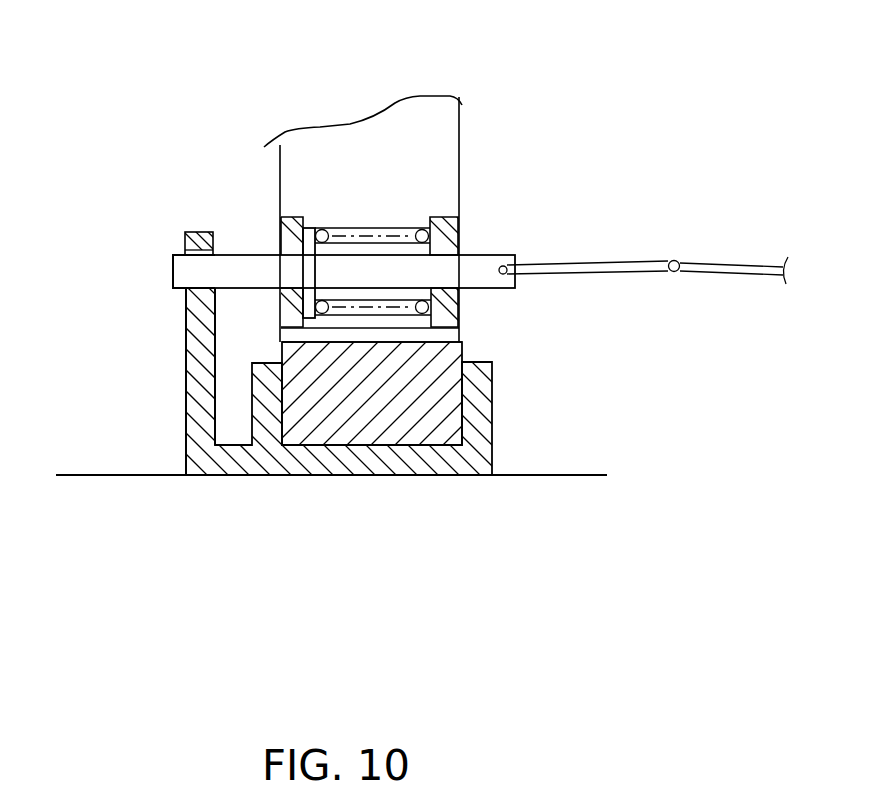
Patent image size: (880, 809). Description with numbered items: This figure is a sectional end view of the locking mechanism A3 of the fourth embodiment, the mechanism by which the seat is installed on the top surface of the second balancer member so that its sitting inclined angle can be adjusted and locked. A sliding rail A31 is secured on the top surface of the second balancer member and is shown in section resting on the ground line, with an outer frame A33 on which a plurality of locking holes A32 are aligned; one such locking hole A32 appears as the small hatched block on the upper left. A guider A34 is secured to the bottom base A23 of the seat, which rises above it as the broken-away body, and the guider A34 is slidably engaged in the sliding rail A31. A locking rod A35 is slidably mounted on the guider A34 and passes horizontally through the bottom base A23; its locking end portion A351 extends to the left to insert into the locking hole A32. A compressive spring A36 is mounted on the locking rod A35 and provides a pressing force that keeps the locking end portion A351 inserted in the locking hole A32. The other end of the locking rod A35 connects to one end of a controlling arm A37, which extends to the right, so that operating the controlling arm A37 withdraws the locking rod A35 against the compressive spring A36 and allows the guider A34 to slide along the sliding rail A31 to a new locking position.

The bottom base A23 is at (398, 133).
The locking mechanism A3 is at (558, 330).
The sliding rail A31 is at (452, 463).
The locking hole A32 is at (190, 232).
The outer frame A33 is at (193, 383).
The guider A34 is at (425, 408).
The locking rod A35 is at (433, 272).
The locking end portion A351 is at (188, 270).
The compressive spring A36 is at (397, 227).
The controlling arm A37 is at (715, 260).